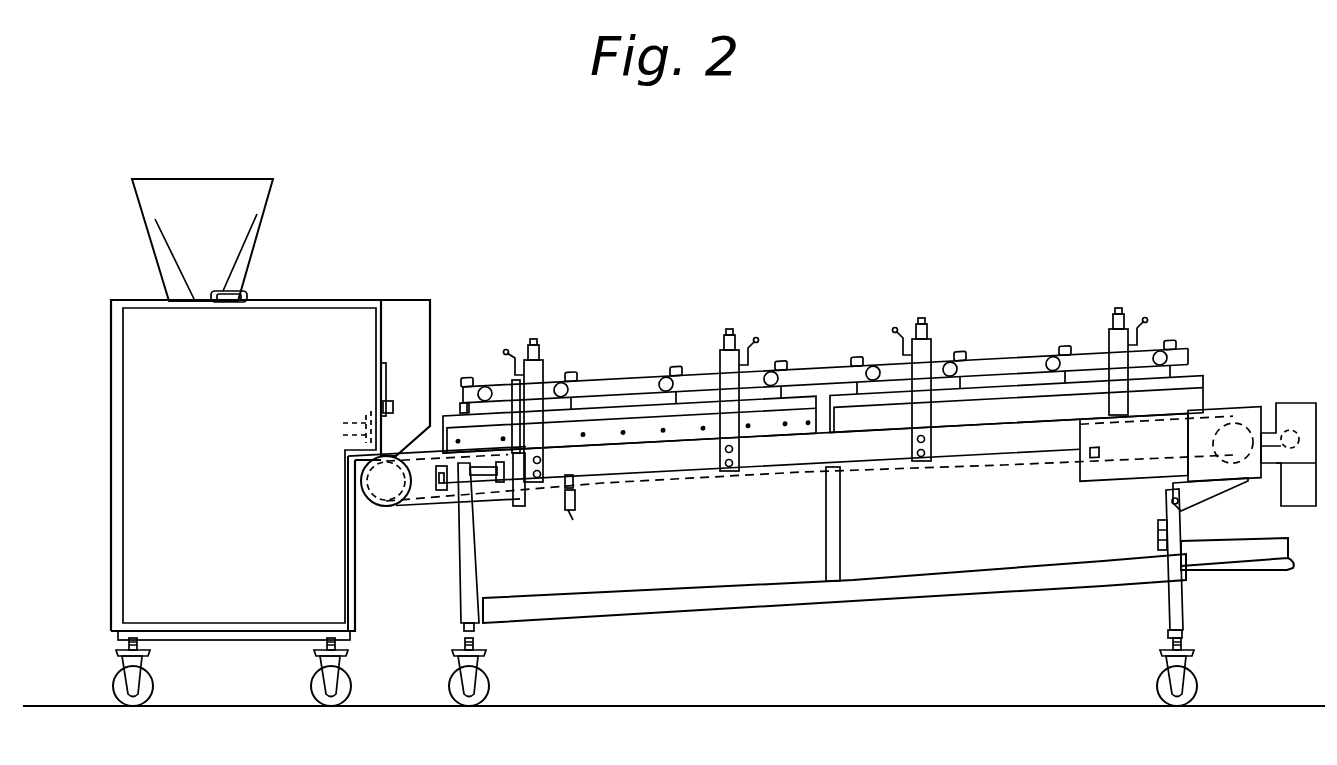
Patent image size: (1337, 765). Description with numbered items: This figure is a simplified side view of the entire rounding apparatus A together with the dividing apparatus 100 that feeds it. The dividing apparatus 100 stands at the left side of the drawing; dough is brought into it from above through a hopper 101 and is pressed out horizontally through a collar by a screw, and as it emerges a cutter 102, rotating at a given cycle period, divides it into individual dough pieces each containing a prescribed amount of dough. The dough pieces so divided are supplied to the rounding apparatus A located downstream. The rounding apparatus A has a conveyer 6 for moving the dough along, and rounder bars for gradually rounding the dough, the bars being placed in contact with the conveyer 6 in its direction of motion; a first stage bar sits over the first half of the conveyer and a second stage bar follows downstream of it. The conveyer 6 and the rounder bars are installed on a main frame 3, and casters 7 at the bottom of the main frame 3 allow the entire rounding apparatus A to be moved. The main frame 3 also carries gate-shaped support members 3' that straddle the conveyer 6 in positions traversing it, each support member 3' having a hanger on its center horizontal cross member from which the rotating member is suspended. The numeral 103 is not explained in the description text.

The rounding apparatus A is at (938, 228).
The main frame 3 is at (888, 610).
The gate-shaped support members 3' is at (826, 389).
The conveyer 6 is at (432, 498).
The casters 7 is at (490, 688).
The dividing apparatus 100 is at (334, 296).
The hopper 101 is at (230, 187).
The cutter 102 is at (381, 381).
The outlet 103 is at (368, 410).